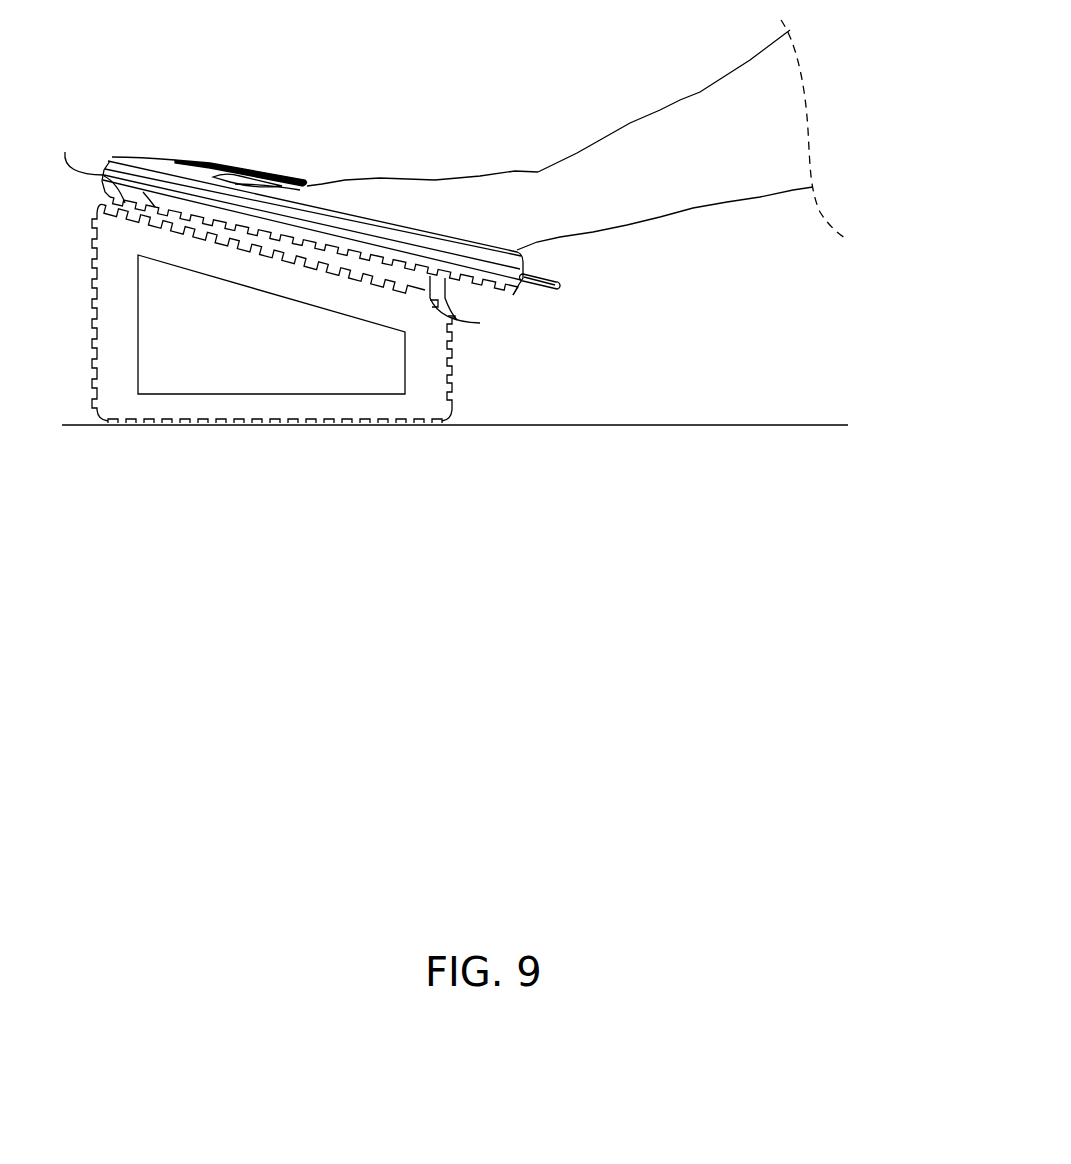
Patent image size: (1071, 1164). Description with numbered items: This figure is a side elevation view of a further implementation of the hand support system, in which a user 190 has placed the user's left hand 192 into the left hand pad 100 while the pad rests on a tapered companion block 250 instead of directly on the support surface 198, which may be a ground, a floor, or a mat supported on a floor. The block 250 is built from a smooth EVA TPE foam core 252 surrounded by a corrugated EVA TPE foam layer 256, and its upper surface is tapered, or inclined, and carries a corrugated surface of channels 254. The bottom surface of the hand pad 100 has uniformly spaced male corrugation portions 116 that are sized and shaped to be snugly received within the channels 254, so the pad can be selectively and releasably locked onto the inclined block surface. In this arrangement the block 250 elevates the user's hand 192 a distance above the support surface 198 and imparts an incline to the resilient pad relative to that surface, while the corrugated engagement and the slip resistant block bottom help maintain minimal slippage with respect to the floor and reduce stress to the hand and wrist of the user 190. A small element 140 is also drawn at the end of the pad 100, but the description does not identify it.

The left hand pad 100 is at (146, 156).
The male corrugation portions 116 is at (480, 323).
The strap loop 140 is at (558, 287).
The user 190 is at (529, 162).
The user's left hand 192 is at (381, 178).
The support surface 198 is at (647, 428).
The block 250 is at (259, 344).
The smooth EVA TPE foam core 252 is at (280, 361).
The channels 254 is at (102, 169).
The corrugated EVA TPE foam layer 256 is at (421, 388).